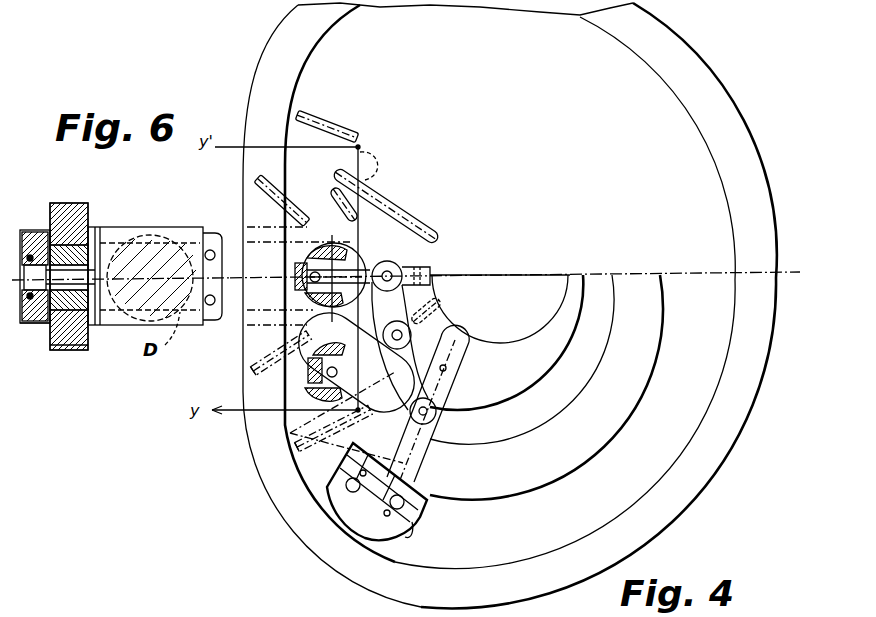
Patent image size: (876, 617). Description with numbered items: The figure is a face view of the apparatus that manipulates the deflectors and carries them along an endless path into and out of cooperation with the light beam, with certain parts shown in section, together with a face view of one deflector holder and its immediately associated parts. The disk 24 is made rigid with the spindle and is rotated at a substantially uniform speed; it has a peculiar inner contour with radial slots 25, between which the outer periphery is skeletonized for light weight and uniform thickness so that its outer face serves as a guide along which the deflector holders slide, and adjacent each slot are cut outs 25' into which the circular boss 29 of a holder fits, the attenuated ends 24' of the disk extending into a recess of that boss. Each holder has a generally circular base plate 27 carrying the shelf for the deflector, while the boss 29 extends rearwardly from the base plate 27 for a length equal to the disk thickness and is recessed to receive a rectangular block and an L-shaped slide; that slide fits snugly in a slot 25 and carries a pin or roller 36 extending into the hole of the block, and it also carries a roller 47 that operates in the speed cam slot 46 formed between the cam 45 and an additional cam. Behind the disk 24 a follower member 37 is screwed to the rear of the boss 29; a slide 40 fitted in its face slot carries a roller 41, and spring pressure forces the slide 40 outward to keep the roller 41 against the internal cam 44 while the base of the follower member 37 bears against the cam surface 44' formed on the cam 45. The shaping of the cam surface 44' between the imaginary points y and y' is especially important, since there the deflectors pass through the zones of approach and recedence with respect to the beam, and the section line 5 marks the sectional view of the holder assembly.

In FIG. 4, the section line / centre axis 5 is at (501, 275).
In FIG. 6, the disk 24 is at (69, 294).
In FIG. 4, the disk 24 is at (296, 280).
In FIG. 6, the attenuated ends 24' is at (66, 226).
In FIG. 4, the attenuated ends 24' is at (306, 189).
In FIG. 4, the radial slots 25 is at (386, 203).
In FIG. 4, the cut outs 25' is at (257, 363).
In FIG. 6, the base plate 27 is at (100, 235).
In FIG. 6, the circular boss 29 is at (68, 250).
In FIG. 4, the circular boss 29 is at (290, 418).
In FIG. 6, the pin or roller 36 is at (82, 325).
In FIG. 6, the follower member 37 is at (40, 323).
In FIG. 4, the follower member 37 is at (412, 535).
In FIG. 6, the slide 40 is at (36, 240).
In FIG. 6, the roller 41 is at (57, 345).
In FIG. 4, the roller 41 is at (345, 515).
In FIG. 4, the internal cam 44 is at (510, 305).
In FIG. 4, the cam surface 44' is at (546, 396).
In FIG. 4, the cam 45 is at (522, 375).
In FIG. 4, the cam slot 46 is at (474, 411).
In FIG. 4, the roller 47 is at (387, 261).